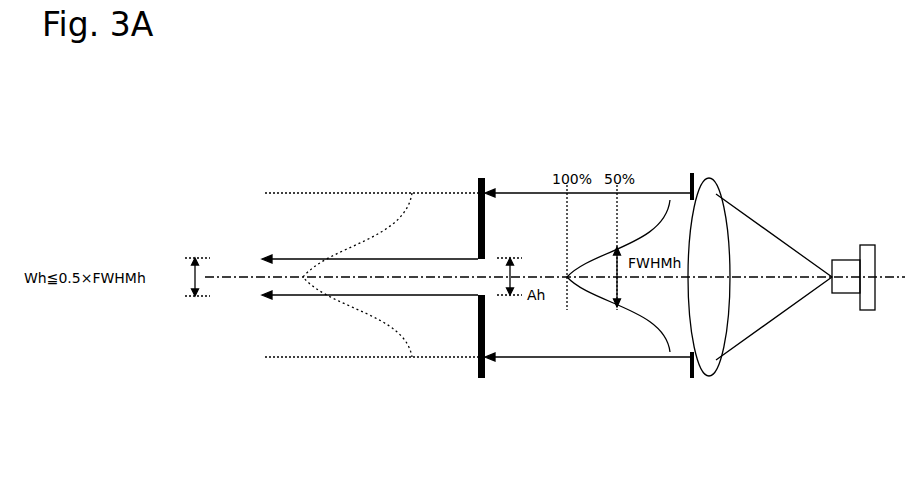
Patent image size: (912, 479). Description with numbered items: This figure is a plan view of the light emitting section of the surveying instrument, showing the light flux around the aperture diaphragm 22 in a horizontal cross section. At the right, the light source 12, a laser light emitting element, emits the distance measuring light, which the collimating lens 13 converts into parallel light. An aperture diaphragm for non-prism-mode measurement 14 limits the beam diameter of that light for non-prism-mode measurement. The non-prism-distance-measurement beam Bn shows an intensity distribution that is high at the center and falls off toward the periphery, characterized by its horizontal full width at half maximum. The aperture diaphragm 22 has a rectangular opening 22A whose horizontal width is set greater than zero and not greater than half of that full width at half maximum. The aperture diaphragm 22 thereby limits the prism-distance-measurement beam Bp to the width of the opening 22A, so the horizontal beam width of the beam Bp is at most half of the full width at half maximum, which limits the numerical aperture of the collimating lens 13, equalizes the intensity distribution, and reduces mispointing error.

The light source 12 is at (847, 294).
The collimating lens 13 is at (712, 365).
The aperture diaphragm for non-prism-mode measurement 14 is at (688, 366).
The aperture diaphragm 22 is at (482, 378).
The opening 22A is at (487, 293).
The prism-distance-measurement beam Bp is at (452, 296).
The non-prism-distance-measurement beam Bn is at (620, 357).